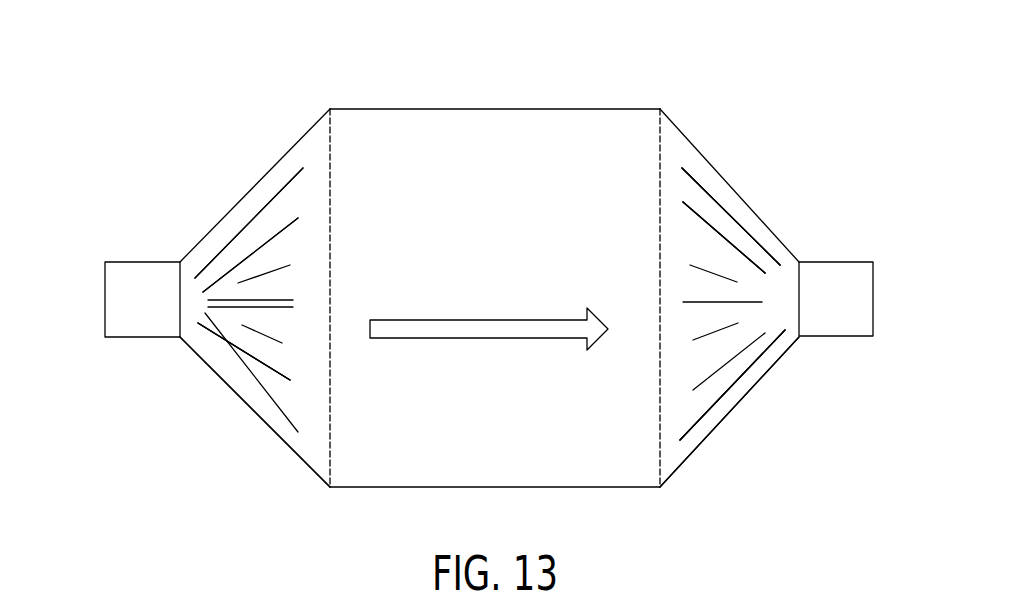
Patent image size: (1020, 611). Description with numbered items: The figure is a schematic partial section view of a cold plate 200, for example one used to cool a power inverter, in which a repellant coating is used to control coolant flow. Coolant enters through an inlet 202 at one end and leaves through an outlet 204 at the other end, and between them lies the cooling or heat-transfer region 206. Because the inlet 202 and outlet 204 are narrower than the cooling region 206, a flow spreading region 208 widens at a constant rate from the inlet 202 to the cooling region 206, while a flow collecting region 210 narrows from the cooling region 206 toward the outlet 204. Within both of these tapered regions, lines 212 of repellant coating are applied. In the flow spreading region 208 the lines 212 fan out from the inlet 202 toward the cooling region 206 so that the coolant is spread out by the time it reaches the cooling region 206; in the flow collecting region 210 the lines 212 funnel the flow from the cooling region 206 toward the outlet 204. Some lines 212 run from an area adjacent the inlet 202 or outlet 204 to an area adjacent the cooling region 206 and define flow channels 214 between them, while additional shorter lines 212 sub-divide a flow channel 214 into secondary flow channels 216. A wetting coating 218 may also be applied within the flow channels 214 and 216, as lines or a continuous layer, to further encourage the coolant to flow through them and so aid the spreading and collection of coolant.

The cold plate 200 is at (824, 110).
The inlet 202 is at (105, 301).
The outlet 204 is at (874, 297).
The cooling region 206 is at (542, 122).
The flow spreading region 208 is at (295, 202).
The flow collecting region 210 is at (708, 252).
The lines of repellant coating 212 is at (247, 282).
The flow channels 214 is at (220, 333).
The secondary flow channels 216 is at (277, 257).
The wetting coating 218 is at (491, 304).